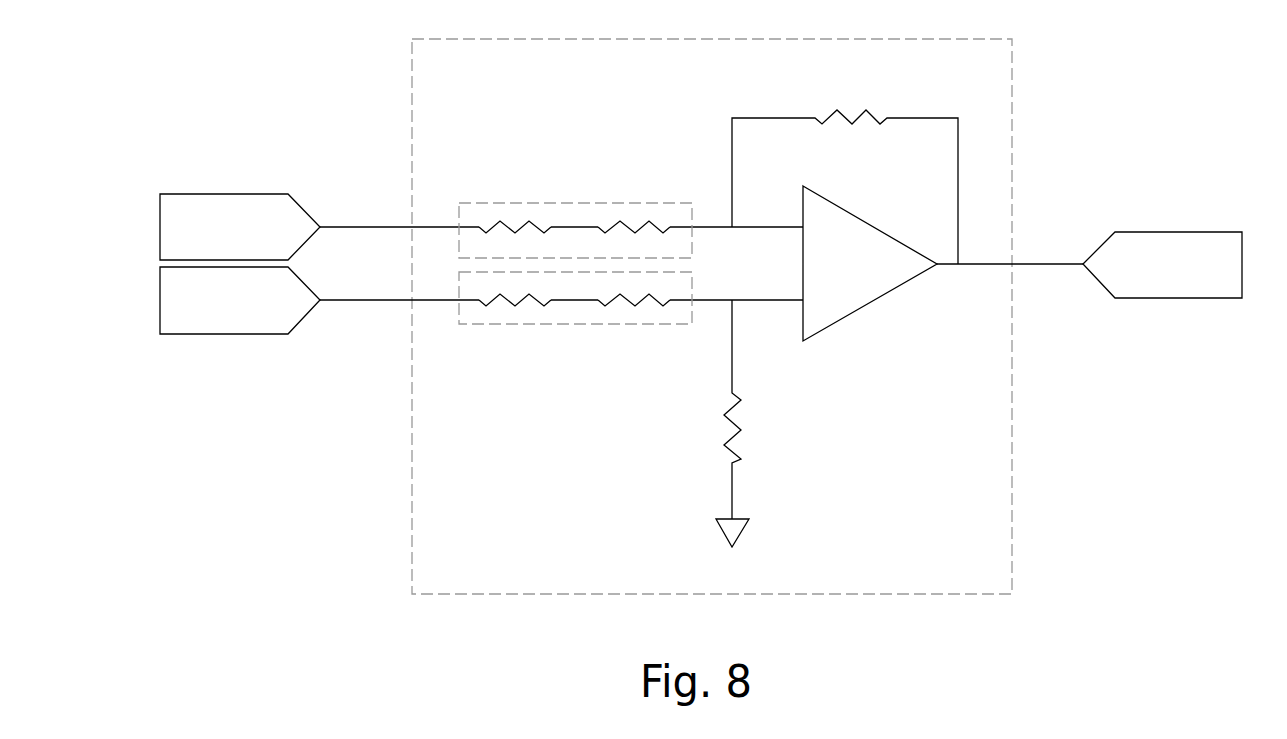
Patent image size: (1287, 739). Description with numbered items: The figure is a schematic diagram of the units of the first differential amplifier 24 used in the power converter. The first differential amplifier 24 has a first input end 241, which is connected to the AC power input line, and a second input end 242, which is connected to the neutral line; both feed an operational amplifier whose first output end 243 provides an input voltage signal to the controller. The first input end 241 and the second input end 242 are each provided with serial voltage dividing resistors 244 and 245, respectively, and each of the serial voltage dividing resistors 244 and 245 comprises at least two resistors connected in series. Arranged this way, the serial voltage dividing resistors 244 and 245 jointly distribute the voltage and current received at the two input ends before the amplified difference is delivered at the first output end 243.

The first differential amplifier 24 is at (687, 316).
The first input end 241 is at (363, 225).
The second input end 242 is at (363, 301).
The first output end 243 is at (1063, 265).
The serial voltage dividing resistor 244 is at (482, 204).
The serial voltage dividing resistor 245 is at (522, 325).